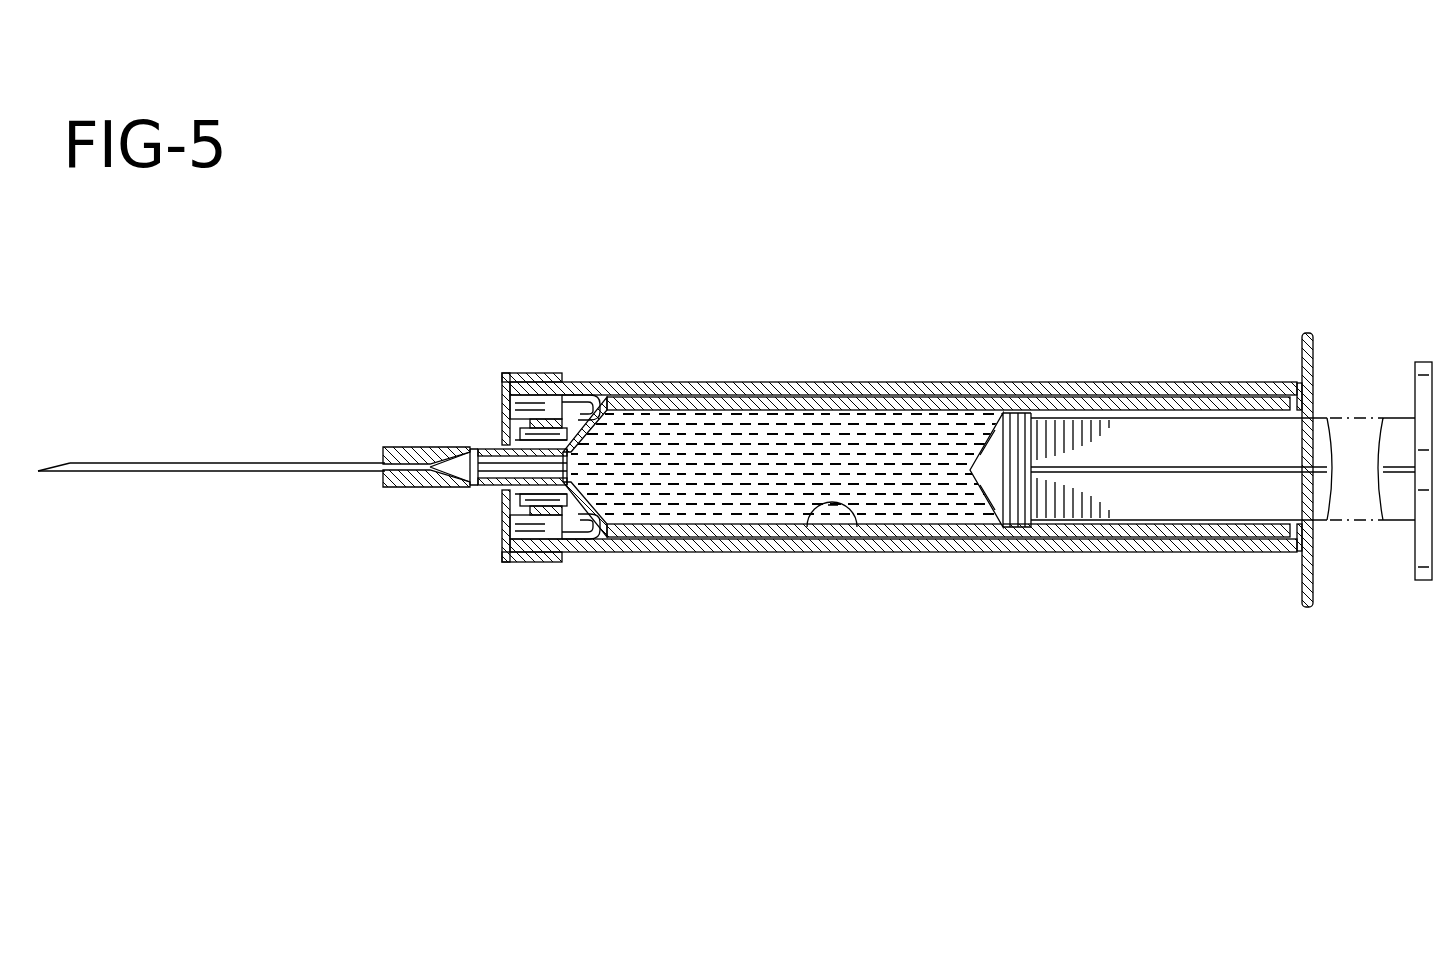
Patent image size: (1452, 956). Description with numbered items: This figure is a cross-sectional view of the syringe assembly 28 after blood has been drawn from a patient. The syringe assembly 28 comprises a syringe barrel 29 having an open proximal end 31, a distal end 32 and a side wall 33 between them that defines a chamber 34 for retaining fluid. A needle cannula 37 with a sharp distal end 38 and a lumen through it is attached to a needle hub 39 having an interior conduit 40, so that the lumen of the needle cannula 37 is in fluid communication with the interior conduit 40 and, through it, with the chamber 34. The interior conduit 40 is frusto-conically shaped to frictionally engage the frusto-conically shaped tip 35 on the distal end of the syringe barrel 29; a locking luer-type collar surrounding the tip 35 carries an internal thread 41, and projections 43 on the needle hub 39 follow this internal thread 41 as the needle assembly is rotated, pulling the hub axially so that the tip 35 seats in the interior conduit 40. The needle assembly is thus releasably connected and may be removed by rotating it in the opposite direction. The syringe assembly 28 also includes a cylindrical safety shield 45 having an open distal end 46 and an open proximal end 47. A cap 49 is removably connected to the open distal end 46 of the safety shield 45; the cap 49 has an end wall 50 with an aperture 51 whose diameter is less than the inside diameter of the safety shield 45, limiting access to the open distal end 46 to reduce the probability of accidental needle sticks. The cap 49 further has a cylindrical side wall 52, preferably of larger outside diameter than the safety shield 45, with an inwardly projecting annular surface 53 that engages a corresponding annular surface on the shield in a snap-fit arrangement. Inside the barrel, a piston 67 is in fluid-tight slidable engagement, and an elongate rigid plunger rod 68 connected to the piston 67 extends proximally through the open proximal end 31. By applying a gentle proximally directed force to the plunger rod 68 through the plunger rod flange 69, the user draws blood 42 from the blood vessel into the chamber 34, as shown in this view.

The syringe assembly 28 is at (1040, 185).
The syringe barrel 29 is at (905, 405).
The open proximal end 31 is at (1266, 548).
The distal end 32 is at (650, 403).
The side wall 33 is at (762, 535).
The chamber 34 is at (815, 512).
The frusto-conically shaped tip 35 is at (490, 443).
The needle cannula 37 is at (220, 472).
The sharp distal end 38 is at (55, 472).
The needle hub 39 is at (385, 487).
The interior conduit 40 is at (445, 487).
The internal thread 41 is at (500, 497).
The blood 42 is at (810, 435).
The projections 43 is at (605, 545).
The safety shield 45 is at (1065, 392).
The open distal end 46 is at (580, 400).
The open proximal end 47 is at (1262, 383).
The cap 49 is at (523, 372).
The end wall 50 is at (498, 388).
The aperture 51 is at (500, 430).
The cylindrical side wall 52 is at (553, 372).
The inwardly projecting annular surface 53 is at (540, 560).
The piston 67 is at (978, 480).
The plunger rod 68 is at (1390, 520).
The plunger rod flange 69 is at (1426, 370).